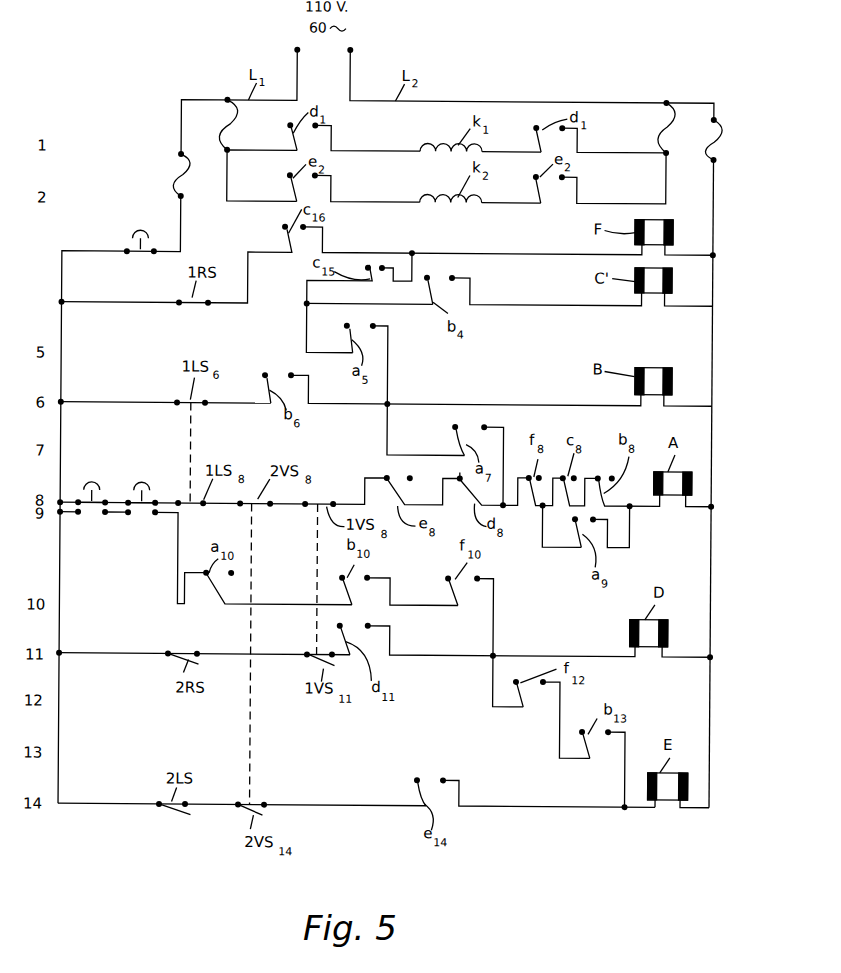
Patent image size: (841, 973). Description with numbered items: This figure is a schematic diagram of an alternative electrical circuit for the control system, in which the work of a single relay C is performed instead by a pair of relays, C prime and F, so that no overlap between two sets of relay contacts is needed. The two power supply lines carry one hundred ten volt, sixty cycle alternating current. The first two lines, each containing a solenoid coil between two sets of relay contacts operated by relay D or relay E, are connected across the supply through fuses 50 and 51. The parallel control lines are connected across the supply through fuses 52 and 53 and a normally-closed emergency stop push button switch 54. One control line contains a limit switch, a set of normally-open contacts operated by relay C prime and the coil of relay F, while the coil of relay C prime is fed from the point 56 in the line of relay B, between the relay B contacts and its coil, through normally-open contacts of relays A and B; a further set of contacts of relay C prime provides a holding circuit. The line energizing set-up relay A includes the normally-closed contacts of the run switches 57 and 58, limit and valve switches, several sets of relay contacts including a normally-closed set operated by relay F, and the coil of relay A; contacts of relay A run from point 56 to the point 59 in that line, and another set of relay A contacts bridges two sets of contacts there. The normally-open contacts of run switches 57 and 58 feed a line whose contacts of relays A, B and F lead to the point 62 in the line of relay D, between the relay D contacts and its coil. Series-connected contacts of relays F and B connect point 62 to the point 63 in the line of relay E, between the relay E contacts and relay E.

The fuse 50 is at (232, 125).
The fuse 51 is at (652, 136).
The fuse 52 is at (173, 174).
The fuse 53 is at (719, 144).
The emergency stop push button switch 54 is at (136, 258).
The point in line 6 56 is at (389, 403).
The run switch 57 is at (97, 482).
The run switch 58 is at (147, 482).
The point in line 8 59 is at (505, 509).
The point in line 11 62 is at (496, 654).
The point in line 14 63 is at (626, 808).